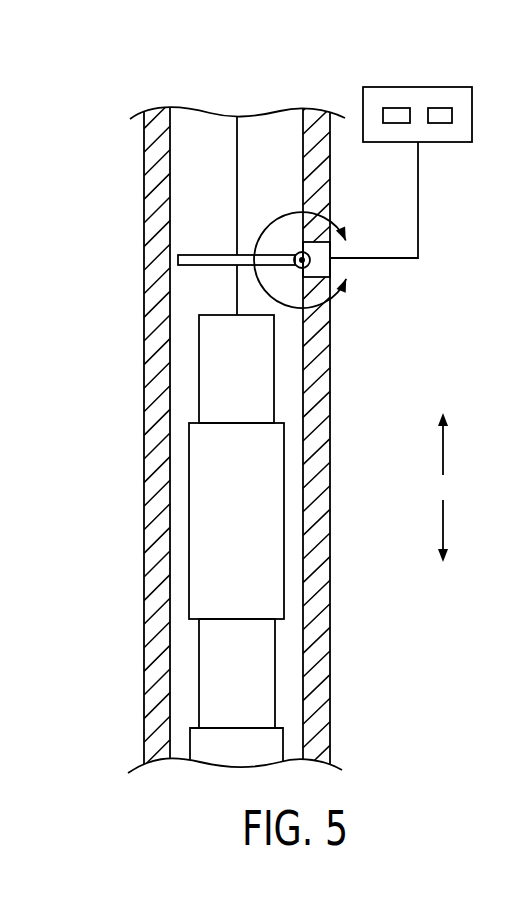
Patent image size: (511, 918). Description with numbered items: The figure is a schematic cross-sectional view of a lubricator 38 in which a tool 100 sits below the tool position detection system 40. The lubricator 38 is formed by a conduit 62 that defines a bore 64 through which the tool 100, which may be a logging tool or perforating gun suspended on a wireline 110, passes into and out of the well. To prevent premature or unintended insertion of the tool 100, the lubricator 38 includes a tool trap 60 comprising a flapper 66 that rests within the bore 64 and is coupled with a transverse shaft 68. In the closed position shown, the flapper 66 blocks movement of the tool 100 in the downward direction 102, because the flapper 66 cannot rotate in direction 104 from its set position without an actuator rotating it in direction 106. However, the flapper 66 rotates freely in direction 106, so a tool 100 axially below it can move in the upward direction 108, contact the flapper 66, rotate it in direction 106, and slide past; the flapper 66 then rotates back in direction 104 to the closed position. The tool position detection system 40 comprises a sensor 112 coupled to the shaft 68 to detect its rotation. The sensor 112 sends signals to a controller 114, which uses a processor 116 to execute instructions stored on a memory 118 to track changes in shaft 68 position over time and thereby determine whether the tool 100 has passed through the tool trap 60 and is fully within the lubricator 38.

The lubricator 38 is at (115, 407).
The tool position detection system 40 is at (420, 318).
The tool trap 60 is at (90, 295).
The conduit 62 is at (143, 607).
The bore 64 is at (288, 652).
The flapper 66 is at (210, 254).
The shaft 68 is at (272, 217).
The tool 100 is at (263, 523).
The direction 102 is at (443, 527).
The direction 104 is at (283, 303).
The direction 106 is at (288, 212).
The direction 108 is at (443, 468).
The wireline 110 is at (236, 163).
The sensor 112 is at (331, 265).
The controller 114 is at (418, 87).
The processor 116 is at (397, 108).
The memory 118 is at (440, 108).